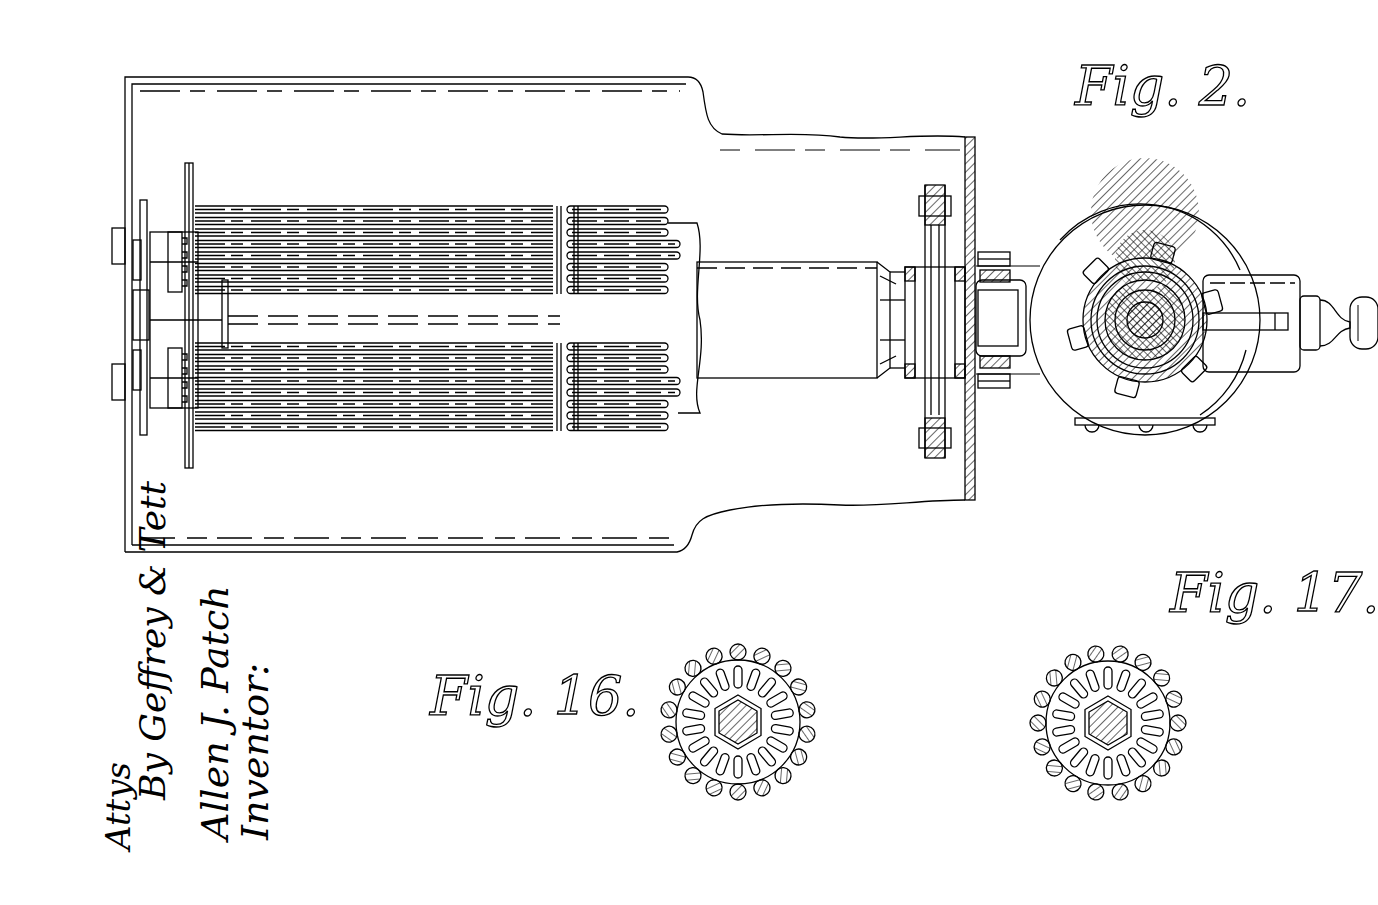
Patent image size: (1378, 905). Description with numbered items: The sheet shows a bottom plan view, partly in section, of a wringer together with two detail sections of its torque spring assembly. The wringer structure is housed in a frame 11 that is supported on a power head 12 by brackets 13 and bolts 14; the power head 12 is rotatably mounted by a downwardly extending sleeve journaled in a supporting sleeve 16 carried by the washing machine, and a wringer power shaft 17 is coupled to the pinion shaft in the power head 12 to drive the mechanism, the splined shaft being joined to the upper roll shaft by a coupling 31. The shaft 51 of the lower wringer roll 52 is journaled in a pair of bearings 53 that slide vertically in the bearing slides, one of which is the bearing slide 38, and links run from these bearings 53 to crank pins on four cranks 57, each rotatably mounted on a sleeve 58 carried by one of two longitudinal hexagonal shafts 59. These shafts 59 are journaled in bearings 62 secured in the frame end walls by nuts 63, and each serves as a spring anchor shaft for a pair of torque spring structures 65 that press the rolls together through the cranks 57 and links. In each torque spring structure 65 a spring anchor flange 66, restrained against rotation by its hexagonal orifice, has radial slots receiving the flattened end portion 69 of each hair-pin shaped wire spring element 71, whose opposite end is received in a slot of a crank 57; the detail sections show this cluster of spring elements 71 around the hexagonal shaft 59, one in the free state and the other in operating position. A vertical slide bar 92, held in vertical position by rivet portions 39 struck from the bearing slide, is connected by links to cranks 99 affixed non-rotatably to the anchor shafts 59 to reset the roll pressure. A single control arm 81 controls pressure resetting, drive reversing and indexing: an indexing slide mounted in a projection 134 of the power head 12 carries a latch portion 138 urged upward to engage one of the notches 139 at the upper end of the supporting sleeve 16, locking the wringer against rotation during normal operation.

In FIG. 2, the frame 11 is at (607, 106).
In FIG. 2, the power head 12 is at (1236, 254).
In FIG. 2, the brackets 13 is at (1000, 378).
In FIG. 2, the bolts 14 is at (1008, 256).
In FIG. 2, the supporting sleeve 16 is at (1143, 380).
In FIG. 2, the wringer power shaft 17 is at (1128, 334).
In FIG. 2, the coupling 31 is at (1002, 330).
In FIG. 2, the bearing slide 38 is at (968, 284).
In FIG. 2, the rivet portions 39 is at (132, 348).
In FIG. 2, the shaft of the lower wringer roll 51 is at (908, 300).
In FIG. 2, the lower wringer roll 52 is at (801, 320).
In FIG. 2, the bearings 53 is at (205, 326).
In FIG. 2, the cranks 57 is at (194, 180).
In FIG. 2, the sleeve 58 is at (184, 240).
In FIG. 2, the hexagonal shafts 59 is at (168, 392).
In FIG. 16, the hexagonal shafts 59 is at (722, 730).
In FIG. 17, the hexagonal shafts 59 is at (1095, 728).
In FIG. 2, the bearings 62 is at (118, 230).
In FIG. 2, the nuts 63 is at (136, 262).
In FIG. 2, the torque spring structures 65 is at (451, 199).
In FIG. 16, the torque spring structures 65 is at (815, 774).
In FIG. 17, the torque spring structures 65 is at (1205, 726).
In FIG. 16, the spring anchor flanges 66 is at (733, 700).
In FIG. 17, the spring anchor flanges 66 is at (1128, 720).
In FIG. 16, the flattened end portion 69 is at (778, 700).
In FIG. 17, the flattened end portion 69 is at (1082, 760).
In FIG. 2, the wire spring elements 71 is at (562, 222).
In FIG. 16, the wire spring elements 71 is at (800, 690).
In FIG. 17, the wire spring elements 71 is at (1112, 660).
In FIG. 2, the control arm 81 is at (1316, 338).
In FIG. 2, the vertical slide bar 92 is at (170, 322).
In FIG. 2, the cranks 99 is at (145, 206).
In FIG. 2, the projection 134 is at (1283, 288).
In FIG. 2, the latch portion 138 is at (1249, 326).
In FIG. 2, the notches 139 is at (1133, 268).